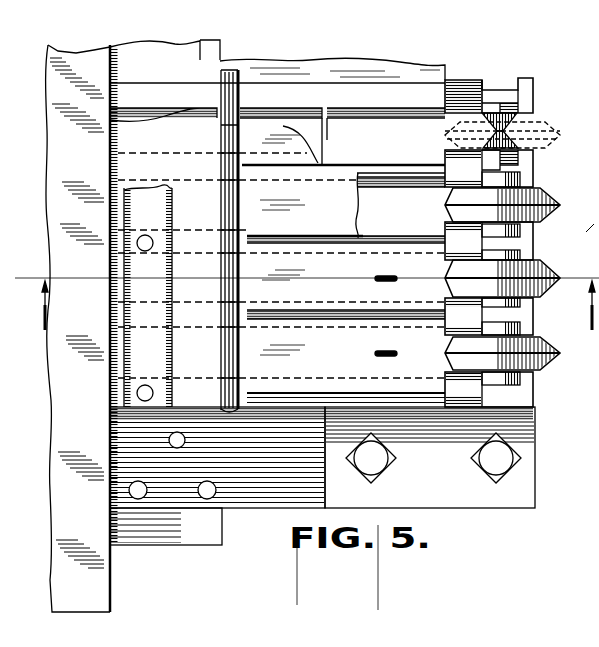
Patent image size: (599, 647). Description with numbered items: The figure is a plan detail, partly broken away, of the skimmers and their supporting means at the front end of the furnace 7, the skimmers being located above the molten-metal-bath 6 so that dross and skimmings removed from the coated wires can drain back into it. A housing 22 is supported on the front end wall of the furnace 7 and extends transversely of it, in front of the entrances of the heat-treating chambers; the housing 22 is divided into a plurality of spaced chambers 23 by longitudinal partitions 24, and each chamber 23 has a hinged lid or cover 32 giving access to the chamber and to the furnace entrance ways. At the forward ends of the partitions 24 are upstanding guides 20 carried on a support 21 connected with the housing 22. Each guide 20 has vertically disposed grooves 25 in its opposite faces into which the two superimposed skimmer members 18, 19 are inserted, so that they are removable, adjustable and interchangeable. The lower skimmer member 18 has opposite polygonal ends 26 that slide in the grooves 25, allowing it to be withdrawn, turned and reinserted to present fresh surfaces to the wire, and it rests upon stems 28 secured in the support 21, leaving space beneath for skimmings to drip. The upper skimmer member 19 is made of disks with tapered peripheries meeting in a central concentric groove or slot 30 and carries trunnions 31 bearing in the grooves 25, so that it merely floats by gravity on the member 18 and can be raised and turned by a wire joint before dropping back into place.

The molten-metal-bath 6 is at (307, 294).
The furnace 7 is at (104, 582).
The skimmer member 18 is at (502, 129).
The skimmer member 19 is at (547, 275).
The guide 20 is at (448, 88).
The support 21 is at (430, 457).
The housing 22 is at (321, 476).
The chamber 23 is at (383, 178).
The longitudinal partition 24 is at (348, 90).
The groove 25 is at (494, 91).
The polygonal end 26 is at (518, 112).
The stem 28 is at (589, 233).
The concentric groove or slot 30 is at (561, 206).
The trunnion 31 is at (522, 182).
The hinged lid or cover 32 is at (296, 128).